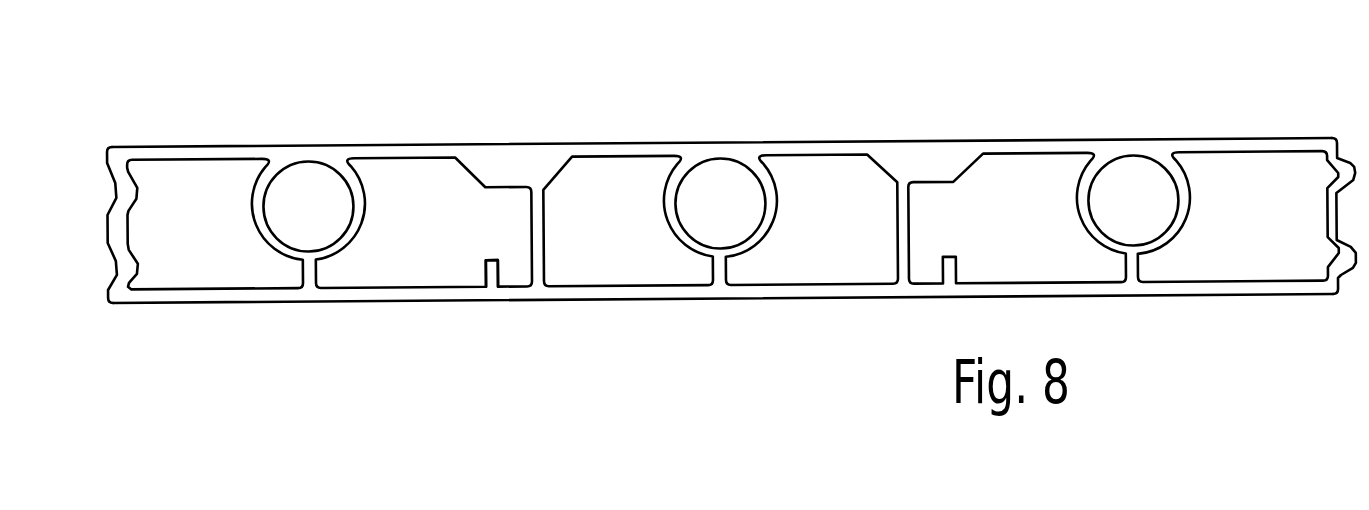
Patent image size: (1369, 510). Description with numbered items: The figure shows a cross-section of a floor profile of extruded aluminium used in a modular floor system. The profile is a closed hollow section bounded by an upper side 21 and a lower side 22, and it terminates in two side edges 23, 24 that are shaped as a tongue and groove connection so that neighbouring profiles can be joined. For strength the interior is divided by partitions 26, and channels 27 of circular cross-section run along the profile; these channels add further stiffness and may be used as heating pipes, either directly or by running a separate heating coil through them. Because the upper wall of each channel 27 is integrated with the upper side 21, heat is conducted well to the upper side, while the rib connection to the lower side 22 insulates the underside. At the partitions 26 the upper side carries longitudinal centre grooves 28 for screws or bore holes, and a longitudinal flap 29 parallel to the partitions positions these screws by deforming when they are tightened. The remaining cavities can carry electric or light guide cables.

The upper side 21 is at (1208, 138).
The lower side 22 is at (1103, 293).
The side edge 23 is at (1352, 198).
The side edge 24 is at (97, 264).
The partition 26 is at (544, 253).
The channel 27 is at (340, 258).
The centre groove 28 is at (514, 143).
The longitudinal flap 29 is at (480, 270).